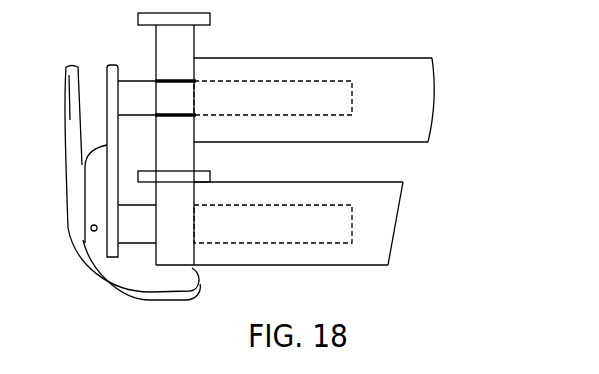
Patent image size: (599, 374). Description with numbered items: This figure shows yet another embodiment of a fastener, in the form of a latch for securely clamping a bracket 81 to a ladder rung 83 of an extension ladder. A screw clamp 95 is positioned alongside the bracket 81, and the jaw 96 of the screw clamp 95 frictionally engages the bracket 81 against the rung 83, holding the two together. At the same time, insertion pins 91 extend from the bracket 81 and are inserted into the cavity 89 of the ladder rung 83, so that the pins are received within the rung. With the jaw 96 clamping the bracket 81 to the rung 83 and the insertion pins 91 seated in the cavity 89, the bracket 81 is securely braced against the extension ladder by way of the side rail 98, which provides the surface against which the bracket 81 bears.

The bracket 81 is at (378, 248).
The ladder rung 83 is at (403, 67).
The cavity 89 is at (168, 82).
The insertion pins 91 is at (352, 100).
The screw clamp 95 is at (78, 202).
The jaw 96 is at (153, 300).
The side rail 98 is at (192, 38).